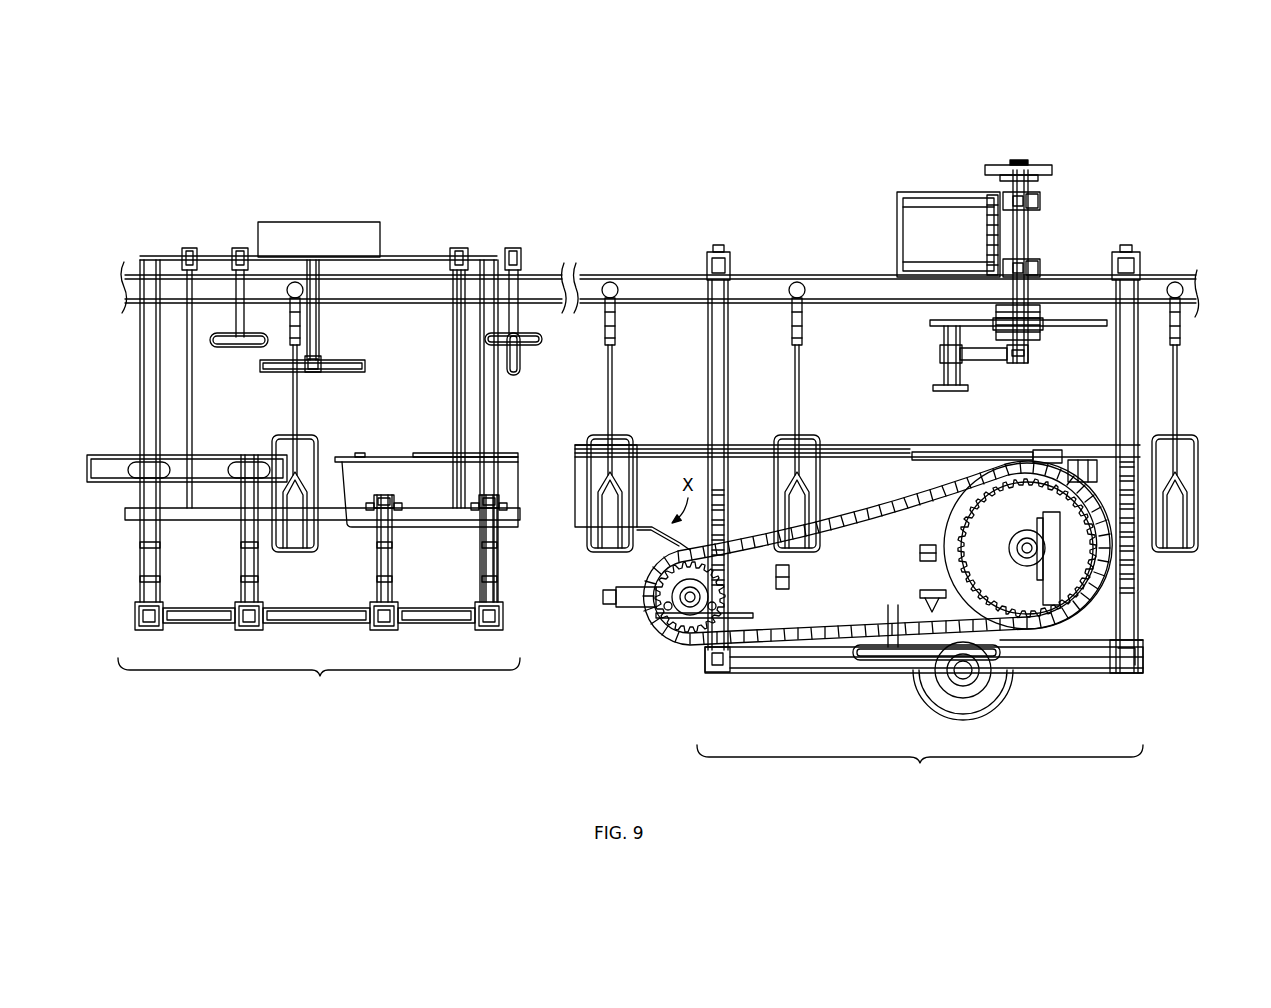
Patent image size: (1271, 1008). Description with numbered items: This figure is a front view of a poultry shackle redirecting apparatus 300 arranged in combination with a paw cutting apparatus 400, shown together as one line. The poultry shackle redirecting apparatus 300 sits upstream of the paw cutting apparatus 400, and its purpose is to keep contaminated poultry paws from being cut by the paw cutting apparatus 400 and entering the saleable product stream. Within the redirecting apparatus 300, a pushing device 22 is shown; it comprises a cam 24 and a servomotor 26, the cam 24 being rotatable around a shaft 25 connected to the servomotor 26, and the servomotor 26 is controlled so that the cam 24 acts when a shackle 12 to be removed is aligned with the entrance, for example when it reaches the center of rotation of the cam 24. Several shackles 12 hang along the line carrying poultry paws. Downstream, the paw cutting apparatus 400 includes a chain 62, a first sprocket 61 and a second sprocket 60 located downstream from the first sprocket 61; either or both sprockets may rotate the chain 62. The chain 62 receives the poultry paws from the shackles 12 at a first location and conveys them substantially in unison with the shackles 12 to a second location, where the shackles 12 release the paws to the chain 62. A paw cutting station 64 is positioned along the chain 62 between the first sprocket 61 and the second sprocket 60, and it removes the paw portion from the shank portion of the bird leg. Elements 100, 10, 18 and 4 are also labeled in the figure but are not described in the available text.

The conveyor system 100 is at (859, 143).
The pushing device 22 is at (290, 200).
The servomotor 26 is at (331, 248).
The overhead track 10 is at (668, 287).
The shaft 25 is at (322, 337).
The cam 24 is at (366, 368).
The shelf 18 is at (105, 470).
The shackle 12 is at (318, 548).
The frame bracket 4 is at (1050, 433).
The chain 62 is at (873, 502).
The second sprocket 60 is at (1075, 556).
The first sprocket 61 is at (690, 603).
The paw cutting station 64 is at (985, 691).
The poultry shackle redirecting apparatus 300 is at (319, 481).
The paw cutting apparatus 400 is at (859, 517).